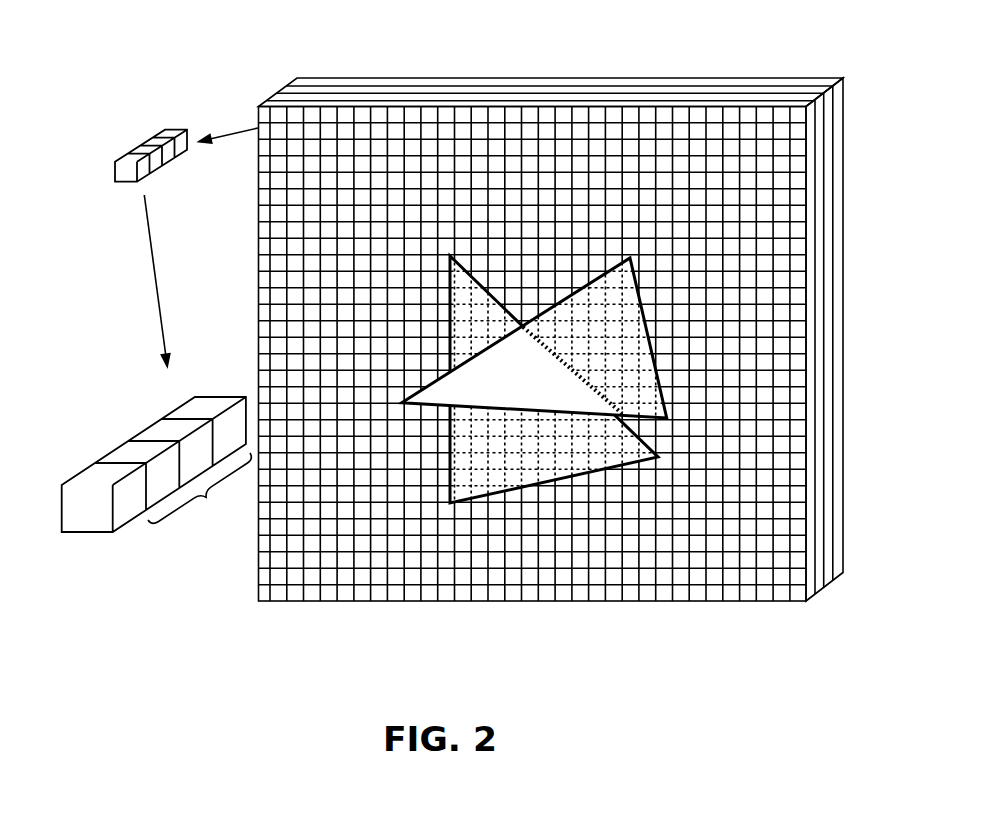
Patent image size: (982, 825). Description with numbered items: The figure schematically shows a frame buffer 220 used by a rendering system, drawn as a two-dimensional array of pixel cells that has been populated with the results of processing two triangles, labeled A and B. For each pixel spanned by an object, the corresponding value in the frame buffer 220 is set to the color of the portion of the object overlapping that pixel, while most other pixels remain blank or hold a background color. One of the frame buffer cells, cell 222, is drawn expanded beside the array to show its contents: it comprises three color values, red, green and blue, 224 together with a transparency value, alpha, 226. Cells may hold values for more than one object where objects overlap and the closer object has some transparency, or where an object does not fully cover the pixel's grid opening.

The frame buffer 220 is at (613, 62).
The frame buffer cell 222 is at (138, 125).
The color values 224 is at (202, 495).
The transparency value 226 is at (130, 538).